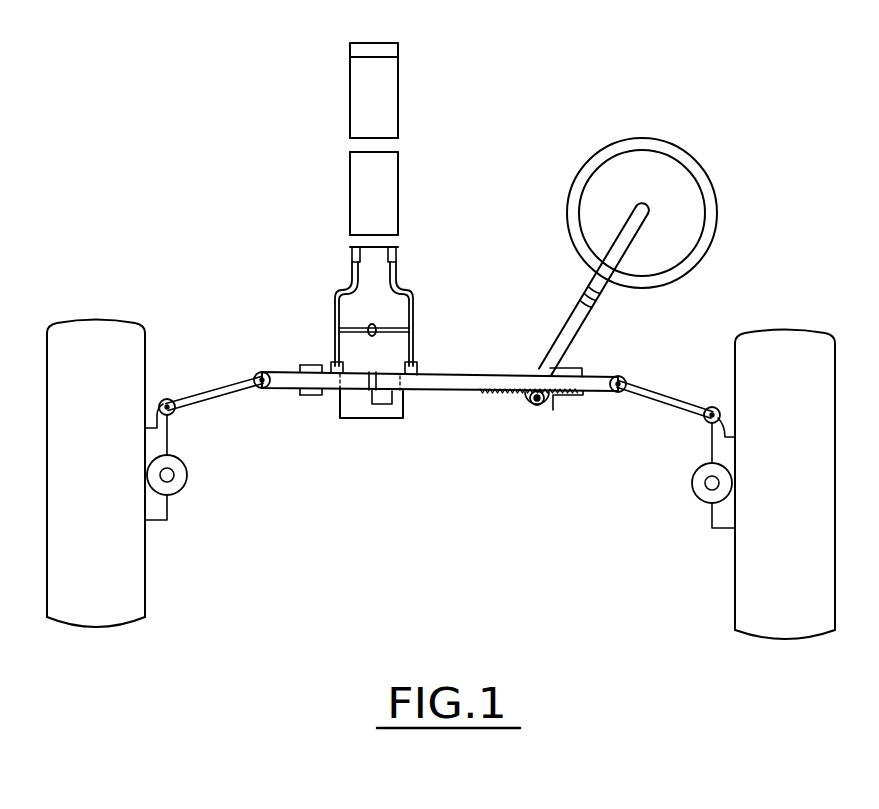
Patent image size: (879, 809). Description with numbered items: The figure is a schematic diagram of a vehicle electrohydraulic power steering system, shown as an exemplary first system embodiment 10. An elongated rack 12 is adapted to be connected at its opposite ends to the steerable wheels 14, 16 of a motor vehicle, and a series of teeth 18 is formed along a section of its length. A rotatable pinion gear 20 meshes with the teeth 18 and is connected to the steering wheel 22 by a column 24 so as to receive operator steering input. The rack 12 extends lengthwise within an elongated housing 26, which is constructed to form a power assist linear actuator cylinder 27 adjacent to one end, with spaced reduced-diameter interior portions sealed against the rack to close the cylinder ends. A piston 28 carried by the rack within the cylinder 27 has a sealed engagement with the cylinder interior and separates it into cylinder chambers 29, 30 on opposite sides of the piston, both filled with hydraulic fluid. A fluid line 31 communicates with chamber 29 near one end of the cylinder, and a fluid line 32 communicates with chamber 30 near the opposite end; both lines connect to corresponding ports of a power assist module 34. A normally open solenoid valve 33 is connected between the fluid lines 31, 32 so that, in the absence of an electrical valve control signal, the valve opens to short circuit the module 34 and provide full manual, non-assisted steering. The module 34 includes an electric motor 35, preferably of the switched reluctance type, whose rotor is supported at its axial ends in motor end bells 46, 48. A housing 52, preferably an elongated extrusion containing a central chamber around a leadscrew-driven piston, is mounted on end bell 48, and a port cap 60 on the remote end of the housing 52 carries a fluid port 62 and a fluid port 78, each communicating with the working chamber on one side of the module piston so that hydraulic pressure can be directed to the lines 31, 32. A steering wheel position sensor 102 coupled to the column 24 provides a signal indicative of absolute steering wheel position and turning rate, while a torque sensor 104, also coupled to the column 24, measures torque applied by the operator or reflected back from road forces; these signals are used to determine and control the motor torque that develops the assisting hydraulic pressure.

The first system embodiment 10 is at (630, 37).
The rack 12 is at (473, 393).
The steerable wheel 14 is at (115, 617).
The steerable wheel 16 is at (775, 632).
The teeth 18 is at (556, 400).
The pinion gear 20 is at (537, 407).
The steering wheel 22 is at (667, 145).
The column 24 is at (573, 339).
The housing 26 is at (455, 371).
The power assist linear actuator cylinder 27 is at (326, 396).
The piston 28 is at (367, 392).
The cylinder chamber 29 is at (357, 390).
The cylinder chamber 30 is at (384, 393).
The fluid line 31 is at (332, 302).
The fluid line 32 is at (413, 298).
The solenoid valve 33 is at (370, 334).
The power assist module 34 is at (401, 175).
The electric motor 35 is at (393, 88).
The motor end bell 46 is at (352, 47).
The motor end bell 48 is at (355, 147).
The housing 52 is at (357, 200).
The port cap 60 is at (395, 240).
The fluid port 62 is at (353, 250).
The fluid port 78 is at (392, 255).
The steering wheel position sensor 102 is at (598, 303).
The torque sensor 104 is at (588, 291).